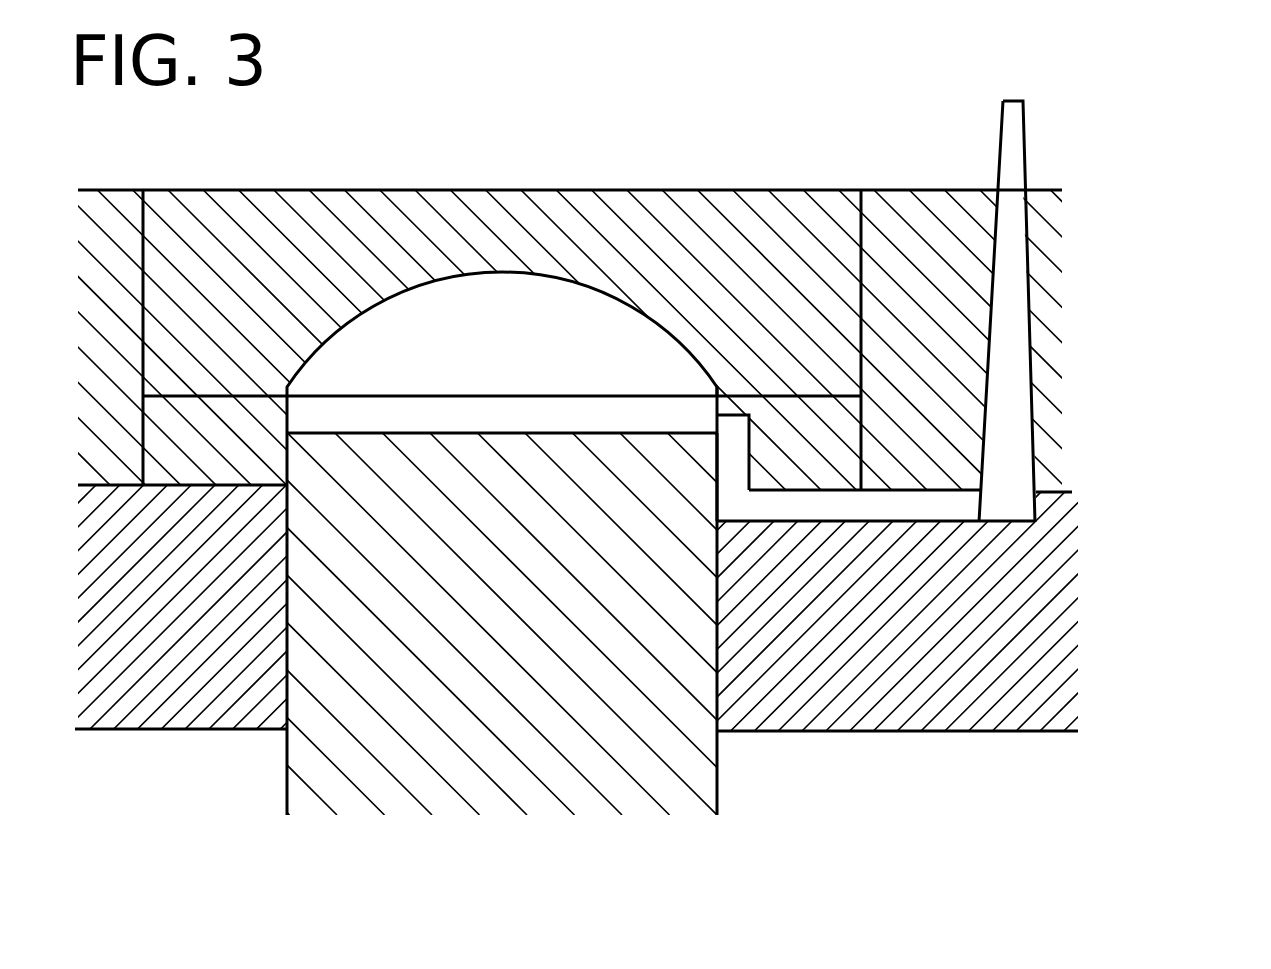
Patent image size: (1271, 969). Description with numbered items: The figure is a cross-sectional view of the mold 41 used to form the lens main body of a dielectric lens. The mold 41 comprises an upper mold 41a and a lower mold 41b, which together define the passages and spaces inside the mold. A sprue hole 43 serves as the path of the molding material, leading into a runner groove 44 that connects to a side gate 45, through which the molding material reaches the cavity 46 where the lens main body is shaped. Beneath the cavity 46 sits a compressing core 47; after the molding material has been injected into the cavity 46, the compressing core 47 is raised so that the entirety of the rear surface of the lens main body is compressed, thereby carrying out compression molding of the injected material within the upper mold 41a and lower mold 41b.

The mold 41 is at (1173, 320).
The upper mold 41a is at (1057, 328).
The lower mold 41b is at (1050, 580).
The sprue hole 43 is at (1012, 240).
The runner groove 44 is at (933, 500).
The side gate 45 is at (735, 448).
The cavity 46 is at (580, 320).
The compressing core 47 is at (542, 758).